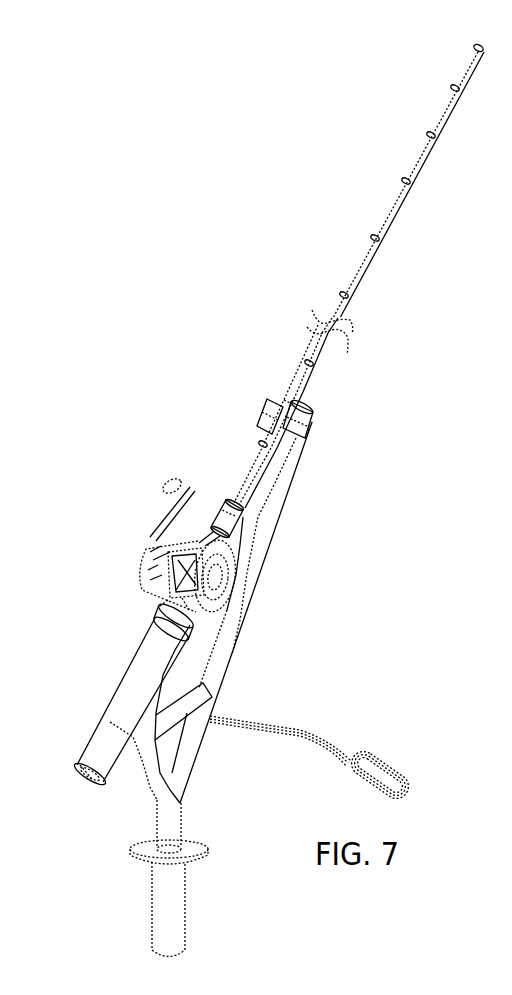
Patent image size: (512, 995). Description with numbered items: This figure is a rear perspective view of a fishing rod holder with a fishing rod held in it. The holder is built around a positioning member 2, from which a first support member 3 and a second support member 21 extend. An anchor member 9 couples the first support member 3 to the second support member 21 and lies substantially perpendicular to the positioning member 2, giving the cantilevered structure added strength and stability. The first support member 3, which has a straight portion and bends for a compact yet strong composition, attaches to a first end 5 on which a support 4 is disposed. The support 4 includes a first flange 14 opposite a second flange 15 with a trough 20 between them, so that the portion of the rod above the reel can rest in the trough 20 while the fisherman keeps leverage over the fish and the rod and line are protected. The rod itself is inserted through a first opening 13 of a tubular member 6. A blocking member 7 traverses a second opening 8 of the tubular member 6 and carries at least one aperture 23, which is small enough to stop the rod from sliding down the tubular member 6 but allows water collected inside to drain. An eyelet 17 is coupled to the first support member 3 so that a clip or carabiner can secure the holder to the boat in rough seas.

The positioning member 2 is at (187, 905).
The first support member 3 is at (236, 650).
The support 4 is at (316, 440).
The first end 5 is at (289, 477).
The tubular member 6 is at (142, 657).
The blocking member 7 is at (66, 766).
The second opening 8 is at (110, 722).
The anchor member 9 is at (190, 722).
The first opening 13 is at (157, 616).
The first flange 14 is at (310, 412).
The second flange 15 is at (262, 412).
The eyelet 17 is at (216, 710).
The trough 20 is at (278, 398).
The second support member 21 is at (152, 790).
The aperture 23 is at (88, 782).